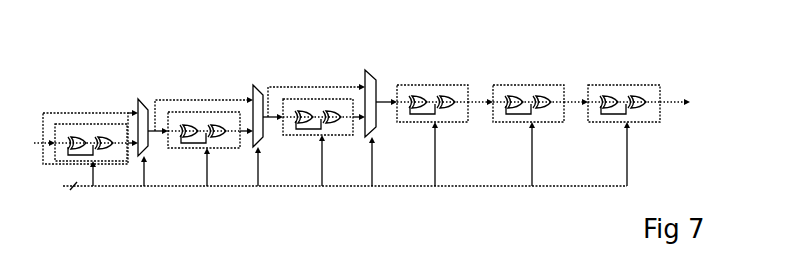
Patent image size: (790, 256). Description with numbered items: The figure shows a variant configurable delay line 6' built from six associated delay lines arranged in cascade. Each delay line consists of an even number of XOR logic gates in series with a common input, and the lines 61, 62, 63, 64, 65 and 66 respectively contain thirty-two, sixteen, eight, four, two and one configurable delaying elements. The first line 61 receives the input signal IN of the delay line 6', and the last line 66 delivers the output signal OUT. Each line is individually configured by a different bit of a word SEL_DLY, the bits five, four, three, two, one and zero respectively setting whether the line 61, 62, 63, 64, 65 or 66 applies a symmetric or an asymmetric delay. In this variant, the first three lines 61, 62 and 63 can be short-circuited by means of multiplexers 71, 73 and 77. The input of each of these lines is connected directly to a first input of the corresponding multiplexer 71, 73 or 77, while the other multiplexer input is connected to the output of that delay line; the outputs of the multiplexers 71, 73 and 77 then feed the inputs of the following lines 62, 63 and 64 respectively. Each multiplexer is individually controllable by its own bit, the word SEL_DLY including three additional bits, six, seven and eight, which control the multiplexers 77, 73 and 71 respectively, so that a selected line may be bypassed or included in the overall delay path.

The delay line 6' is at (363, 105).
The delay line 61 is at (87, 123).
The multiplexer 71 is at (140, 99).
The delay line 62 is at (200, 111).
The multiplexer 73 is at (254, 85).
The delay line 63 is at (313, 98).
The multiplexer 77 is at (366, 70).
The delay line 64 is at (427, 84).
The delay line 65 is at (523, 84).
The delay line 66 is at (620, 84).